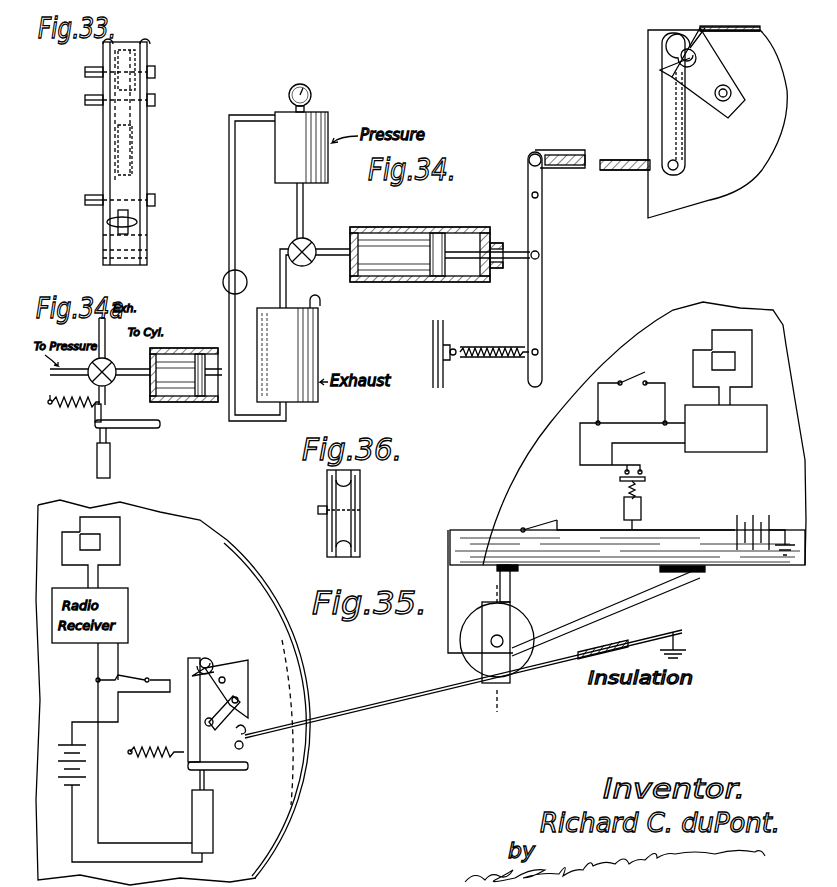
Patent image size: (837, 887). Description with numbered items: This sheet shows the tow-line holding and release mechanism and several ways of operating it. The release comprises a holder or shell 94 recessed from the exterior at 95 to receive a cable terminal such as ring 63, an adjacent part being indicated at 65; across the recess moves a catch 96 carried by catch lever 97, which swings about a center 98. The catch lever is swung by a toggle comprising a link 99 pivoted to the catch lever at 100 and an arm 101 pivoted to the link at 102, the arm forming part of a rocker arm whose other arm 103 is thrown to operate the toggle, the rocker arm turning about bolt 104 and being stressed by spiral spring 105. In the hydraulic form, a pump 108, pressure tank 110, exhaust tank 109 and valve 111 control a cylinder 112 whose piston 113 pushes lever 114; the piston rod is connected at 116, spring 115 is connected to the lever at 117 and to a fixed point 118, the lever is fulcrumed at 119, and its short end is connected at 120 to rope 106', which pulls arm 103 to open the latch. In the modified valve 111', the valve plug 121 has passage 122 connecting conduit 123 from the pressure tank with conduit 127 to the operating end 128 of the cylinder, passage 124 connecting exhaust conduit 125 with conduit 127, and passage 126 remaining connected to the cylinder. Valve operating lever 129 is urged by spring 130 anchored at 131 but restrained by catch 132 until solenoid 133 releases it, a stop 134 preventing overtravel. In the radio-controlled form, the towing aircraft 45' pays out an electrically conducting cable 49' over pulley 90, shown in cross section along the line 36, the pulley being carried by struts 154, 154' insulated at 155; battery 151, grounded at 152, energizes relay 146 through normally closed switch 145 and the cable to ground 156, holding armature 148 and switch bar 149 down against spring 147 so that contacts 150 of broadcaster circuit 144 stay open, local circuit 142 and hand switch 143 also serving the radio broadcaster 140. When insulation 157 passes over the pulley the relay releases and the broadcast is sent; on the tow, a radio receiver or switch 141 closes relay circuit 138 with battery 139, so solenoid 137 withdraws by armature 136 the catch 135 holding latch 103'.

In FIG. 33, the holder or shell 94 is at (110, 168).
In FIG. 34, the holder or shell 94 is at (648, 106).
In FIG. 33, the recess 95 is at (135, 232).
In FIG. 34, the recess 95 is at (693, 4).
In FIG. 33, the catch 96 is at (130, 213).
In FIG. 35, the catch 96 is at (245, 728).
In FIG. 33, the catch lever 97 is at (135, 172).
In FIG. 35, the catch lever 97 is at (224, 713).
In FIG. 35, the pivot center 98 is at (210, 726).
In FIG. 33, the link 99 is at (135, 120).
In FIG. 34, the link 99 is at (735, 100).
In FIG. 35, the link 99 is at (245, 680).
In FIG. 33, the pivot 100 is at (138, 145).
In FIG. 35, the pivot 100 is at (238, 697).
In FIG. 34, the arm 101 is at (715, 72).
In FIG. 35, the arm 101 is at (235, 662).
In FIG. 33, the pivot 102 is at (145, 92).
In FIG. 34, the pivot 102 is at (731, 90).
In FIG. 35, the pivot 102 is at (226, 676).
In FIG. 34, the rocker arm 103 is at (696, 121).
In FIG. 35, the latch 103' is at (174, 710).
In FIG. 33, the bolt 104 is at (100, 85).
In FIG. 34, the bolt 104 is at (672, 62).
In FIG. 35, the bolt 104 is at (200, 666).
In FIG. 33, the spiral spring 105 is at (118, 42).
In FIG. 34, the spiral spring 105 is at (694, 43).
In FIG. 35, the spiral spring 105 is at (208, 658).
In FIG. 34, the rope 106' is at (625, 180).
In FIG. 33, the ring 65 is at (118, 226).
In FIG. 35, the ring 63 is at (242, 748).
In FIG. 34, the pump 108 is at (226, 290).
In FIG. 34, the exhaust tank 109 is at (318, 355).
In FIG. 34, the pressure tank 110 is at (320, 130).
In FIG. 34, the valve 111 is at (318, 233).
In FIG. 34A, the valve 111' is at (114, 355).
In FIG. 34, the cylinder 112 is at (400, 227).
In FIG. 34, the piston 113 is at (437, 233).
In FIG. 34, the lever 114 is at (542, 225).
In FIG. 34, the spring 115 is at (490, 357).
In FIG. 34, the piston rod connection 116 is at (540, 257).
In FIG. 34, the spring connection 117 is at (540, 350).
In FIG. 34, the fixed point 118 is at (450, 347).
In FIG. 34, the fulcrum 119 is at (539, 196).
In FIG. 34, the rope connection 120 is at (529, 160).
In FIG. 34A, the valve plug 121 is at (105, 396).
In FIG. 34A, the valve passage 122 is at (92, 378).
In FIG. 34, the conduit 123 is at (298, 225).
In FIG. 34A, the conduit 123 is at (62, 376).
In FIG. 34A, the valve passage 124 is at (99, 358).
In FIG. 34, the conduit 125 is at (284, 286).
In FIG. 34A, the conduit 125 is at (99, 330).
In FIG. 34A, the passage 126 is at (110, 364).
In FIG. 34A, the conduit 127 is at (128, 376).
In FIG. 34A, the operating end of cylinder 128 is at (185, 340).
In FIG. 34A, the valve operating lever 129 is at (130, 420).
In FIG. 34A, the spring 130 is at (88, 405).
In FIG. 34A, the anchor 131 is at (48, 408).
In FIG. 34A, the catch 132 is at (132, 428).
In FIG. 34A, the solenoid 133 is at (110, 463).
In FIG. 34A, the stop 134 is at (70, 405).
In FIG. 35, the catch 135 is at (190, 768).
In FIG. 35, the armature 136 is at (205, 787).
In FIG. 35, the solenoid 137 is at (213, 839).
In FIG. 35, the relay circuit 138 is at (98, 818).
In FIG. 35, the local battery 139 is at (66, 790).
In FIG. 35, the radio broadcaster 140 is at (745, 448).
In FIG. 35, the switch 141 is at (146, 678).
In FIG. 35, the local circuit 142 is at (718, 531).
In FIG. 35, the hand switch 143 is at (644, 374).
In FIG. 35, the broadcaster circuit 144 is at (612, 408).
In FIG. 35, the switch 145 is at (557, 520).
In FIG. 35, the relay 146 is at (641, 510).
In FIG. 35, the spring 147 is at (640, 492).
In FIG. 35, the armature 148 is at (646, 480).
In FIG. 35, the switch bar 149 is at (603, 500).
In FIG. 35, the contacts 150 is at (624, 473).
In FIG. 35, the battery 151 is at (752, 520).
In FIG. 35, the ground 152 is at (786, 556).
In FIG. 35, the strut 154 is at (481, 621).
In FIG. 35, the strut 154' is at (606, 613).
In FIG. 35, the insulation 155 is at (518, 572).
In FIG. 35, the ground 156 is at (688, 655).
In FIG. 35, the length of insulation 157 is at (600, 650).
In FIG. 36, the pulley 90 is at (352, 526).
In FIG. 35, the pulley 90 is at (462, 630).
In FIG. 35, the section line 36 is at (491, 592).
In FIG. 35, the towing aircraft 45' is at (644, 433).
In FIG. 35, the electrically conducting cable 49' is at (463, 684).